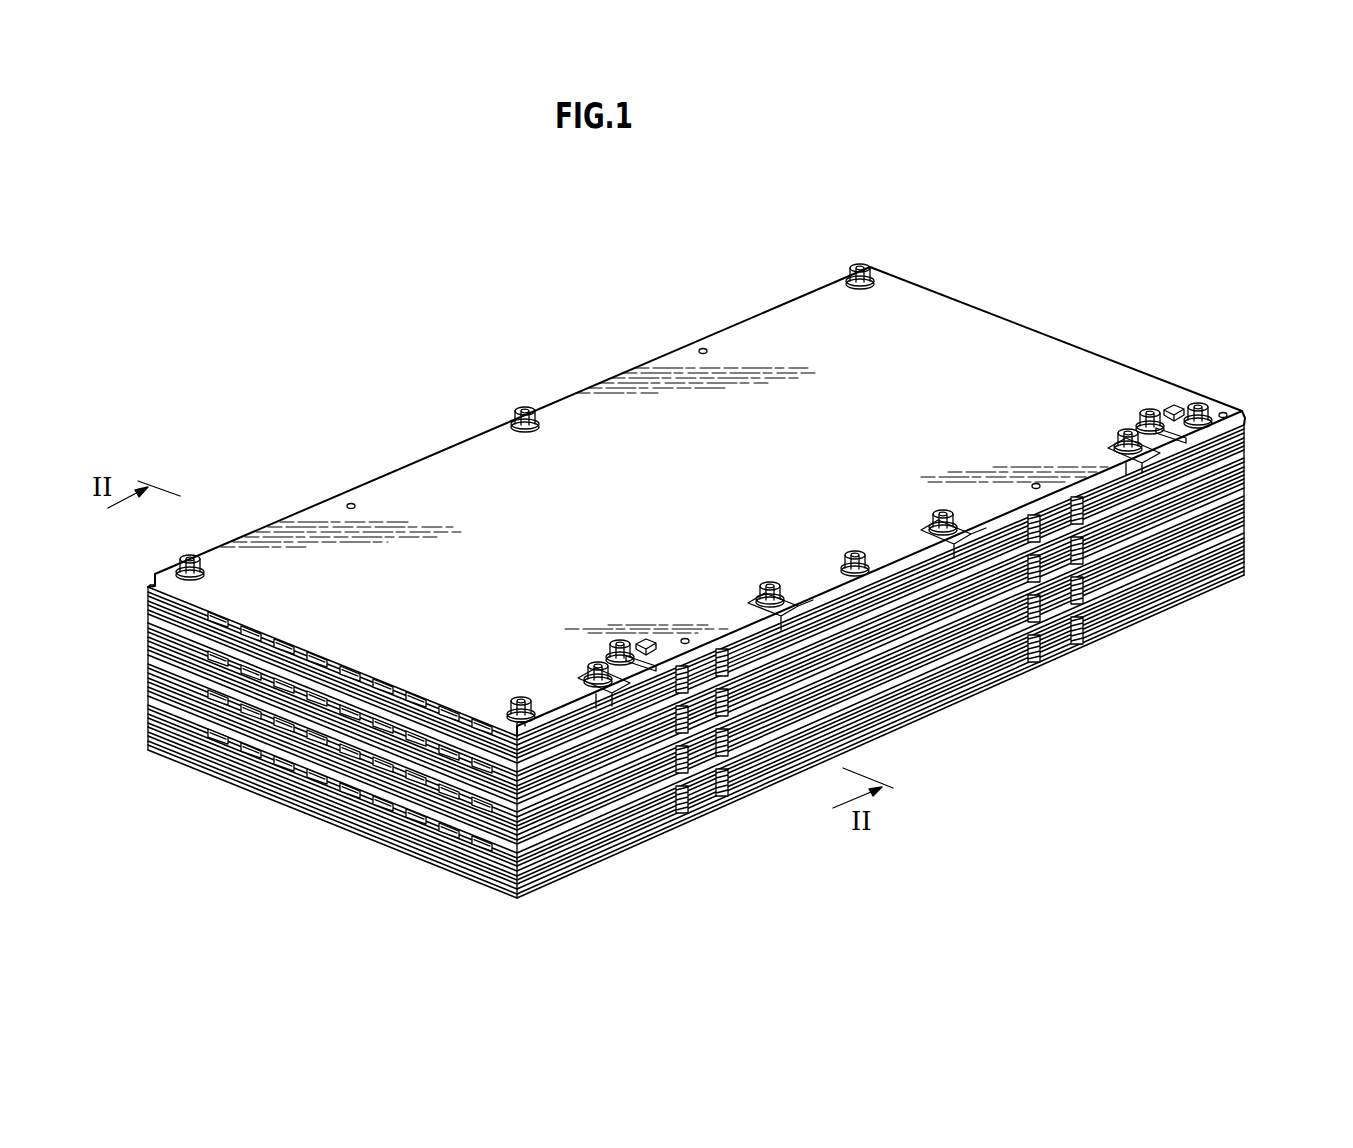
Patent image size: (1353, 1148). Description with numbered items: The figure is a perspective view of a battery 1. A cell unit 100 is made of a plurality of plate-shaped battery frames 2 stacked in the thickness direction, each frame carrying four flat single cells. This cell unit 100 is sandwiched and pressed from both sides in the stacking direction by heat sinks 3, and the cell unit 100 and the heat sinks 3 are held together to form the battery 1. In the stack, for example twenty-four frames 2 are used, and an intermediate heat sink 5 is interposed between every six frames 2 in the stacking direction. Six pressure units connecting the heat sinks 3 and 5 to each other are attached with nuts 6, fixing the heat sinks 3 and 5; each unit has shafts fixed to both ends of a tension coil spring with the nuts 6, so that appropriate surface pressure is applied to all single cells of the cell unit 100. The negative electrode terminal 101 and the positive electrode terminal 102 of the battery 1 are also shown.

The battery 1 is at (607, 312).
The battery frame 2 is at (1145, 603).
The heat sink 3 is at (1048, 338).
The intermediate heat sink 5 is at (467, 828).
The nut 6 is at (850, 258).
The cell unit 100 is at (1254, 405).
The negative electrode terminal 101 is at (612, 632).
The positive electrode terminal 102 is at (1139, 400).